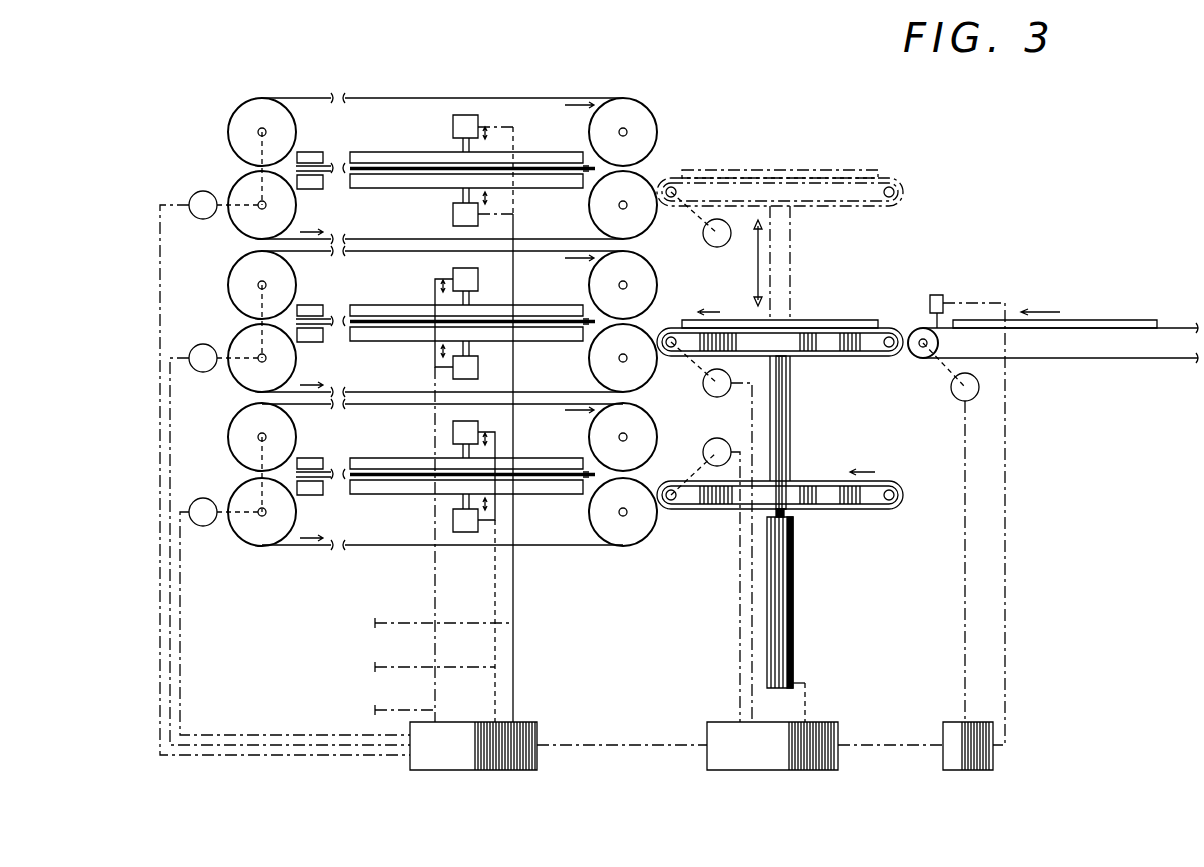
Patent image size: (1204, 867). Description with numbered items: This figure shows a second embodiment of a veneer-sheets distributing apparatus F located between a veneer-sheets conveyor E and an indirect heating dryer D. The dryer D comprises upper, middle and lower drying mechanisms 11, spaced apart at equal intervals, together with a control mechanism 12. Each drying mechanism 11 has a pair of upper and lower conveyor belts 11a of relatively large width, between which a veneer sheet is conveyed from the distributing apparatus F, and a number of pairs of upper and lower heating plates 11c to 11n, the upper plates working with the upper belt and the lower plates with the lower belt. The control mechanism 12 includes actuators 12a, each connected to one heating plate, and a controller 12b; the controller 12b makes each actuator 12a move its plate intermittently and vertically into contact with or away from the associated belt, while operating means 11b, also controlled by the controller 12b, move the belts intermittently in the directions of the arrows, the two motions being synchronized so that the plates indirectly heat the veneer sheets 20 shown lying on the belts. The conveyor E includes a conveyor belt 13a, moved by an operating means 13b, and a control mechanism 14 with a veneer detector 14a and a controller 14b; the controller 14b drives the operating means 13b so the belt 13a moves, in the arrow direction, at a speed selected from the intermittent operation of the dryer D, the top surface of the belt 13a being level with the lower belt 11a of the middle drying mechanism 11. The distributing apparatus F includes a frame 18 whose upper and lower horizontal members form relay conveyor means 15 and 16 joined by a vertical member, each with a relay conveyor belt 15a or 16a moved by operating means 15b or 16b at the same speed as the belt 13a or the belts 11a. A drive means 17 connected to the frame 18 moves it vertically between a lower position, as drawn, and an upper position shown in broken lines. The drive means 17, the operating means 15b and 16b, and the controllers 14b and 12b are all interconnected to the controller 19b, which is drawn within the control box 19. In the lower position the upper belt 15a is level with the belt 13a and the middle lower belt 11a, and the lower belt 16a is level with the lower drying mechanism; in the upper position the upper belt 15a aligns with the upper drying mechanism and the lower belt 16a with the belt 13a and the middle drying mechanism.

The drying mechanism 11 is at (228, 160).
The conveyor belt 11a is at (593, 170).
The operating means 11b is at (203, 218).
The heating plate 11c is at (543, 183).
The heating plate 11n is at (308, 168).
The control mechanism 12 is at (522, 673).
The actuator 12a is at (457, 207).
The controller 12b is at (523, 727).
The conveyor belt 13a is at (1055, 360).
The operating means 13b is at (961, 403).
The control mechanism 14 is at (1012, 686).
The veneer detector 14a is at (943, 300).
The controller 14b is at (993, 758).
The upper relay conveyor means 15 is at (803, 375).
The relay conveyor belt 15a is at (856, 357).
The operating means 15b is at (703, 388).
The lower relay conveyor means 16 is at (805, 525).
The relay conveyor belt 16a is at (858, 512).
The operating means 16b is at (704, 449).
The drive means 17 is at (793, 645).
The frame 18 is at (777, 478).
The transfer control box 19 is at (724, 708).
The controller 19b is at (820, 722).
The film sheet / workpiece 20 is at (405, 173).
The indirect heating dryer D is at (406, 558).
The veneer-sheets conveyor E is at (1130, 405).
The veneer-sheets distributing apparatus F is at (776, 142).